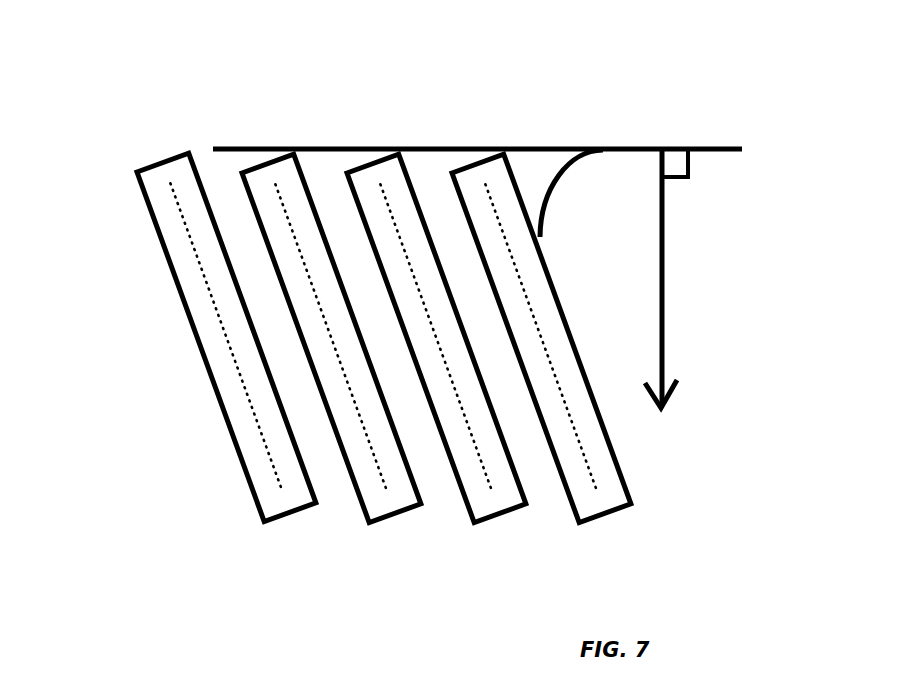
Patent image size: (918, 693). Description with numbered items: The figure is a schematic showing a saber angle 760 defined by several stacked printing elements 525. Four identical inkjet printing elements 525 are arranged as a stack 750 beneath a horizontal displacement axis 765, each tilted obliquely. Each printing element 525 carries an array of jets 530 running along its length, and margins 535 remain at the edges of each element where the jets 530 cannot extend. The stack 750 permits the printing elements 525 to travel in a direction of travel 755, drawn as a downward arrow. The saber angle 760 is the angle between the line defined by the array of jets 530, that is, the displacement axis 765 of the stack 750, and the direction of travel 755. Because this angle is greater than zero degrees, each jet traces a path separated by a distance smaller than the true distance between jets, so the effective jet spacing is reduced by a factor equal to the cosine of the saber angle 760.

The printing element 525 is at (226, 393).
The jets 530 is at (232, 400).
The margins 535 is at (605, 503).
The stack 750 is at (391, 393).
The direction of travel 755 is at (687, 281).
The saber angle 760 is at (582, 214).
The displacement axis 765 is at (400, 120).